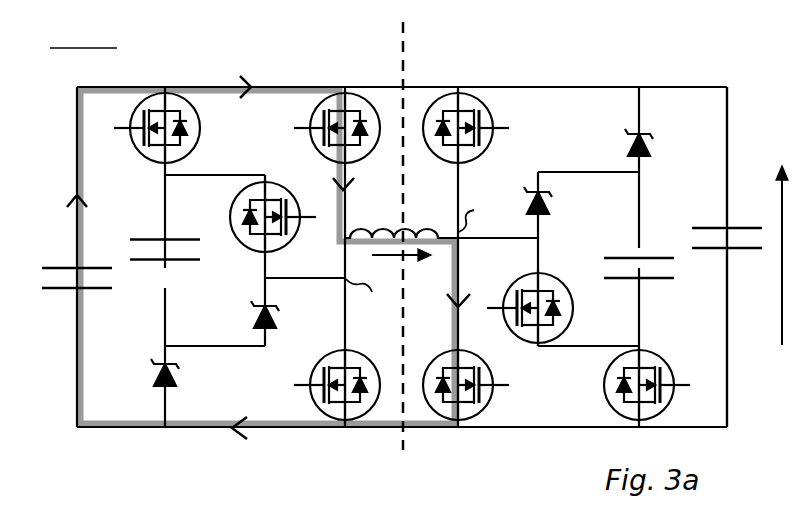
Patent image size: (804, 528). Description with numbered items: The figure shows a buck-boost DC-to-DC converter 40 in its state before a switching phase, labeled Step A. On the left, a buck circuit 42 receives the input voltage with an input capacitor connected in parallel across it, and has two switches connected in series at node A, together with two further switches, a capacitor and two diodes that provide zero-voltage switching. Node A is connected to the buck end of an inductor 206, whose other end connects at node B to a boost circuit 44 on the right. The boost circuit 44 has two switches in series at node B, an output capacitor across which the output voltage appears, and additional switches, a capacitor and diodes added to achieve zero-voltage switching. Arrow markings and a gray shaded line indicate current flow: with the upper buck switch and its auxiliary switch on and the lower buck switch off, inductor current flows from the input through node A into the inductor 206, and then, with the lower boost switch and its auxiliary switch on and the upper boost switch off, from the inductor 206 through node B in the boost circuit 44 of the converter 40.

The buck-boost DC-to-DC converter 40 is at (318, 461).
The buck circuit 42 is at (335, 78).
The boost circuit 44 is at (700, 78).
The inductor 206 is at (388, 232).